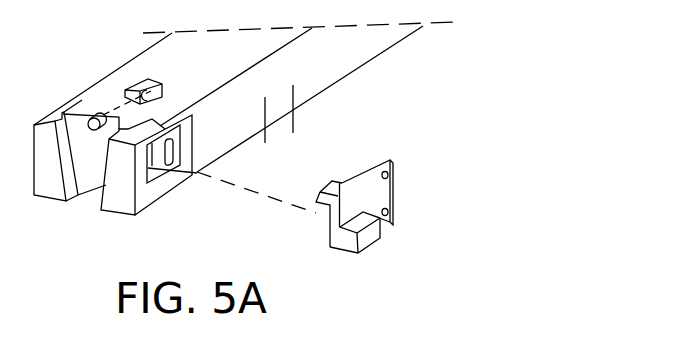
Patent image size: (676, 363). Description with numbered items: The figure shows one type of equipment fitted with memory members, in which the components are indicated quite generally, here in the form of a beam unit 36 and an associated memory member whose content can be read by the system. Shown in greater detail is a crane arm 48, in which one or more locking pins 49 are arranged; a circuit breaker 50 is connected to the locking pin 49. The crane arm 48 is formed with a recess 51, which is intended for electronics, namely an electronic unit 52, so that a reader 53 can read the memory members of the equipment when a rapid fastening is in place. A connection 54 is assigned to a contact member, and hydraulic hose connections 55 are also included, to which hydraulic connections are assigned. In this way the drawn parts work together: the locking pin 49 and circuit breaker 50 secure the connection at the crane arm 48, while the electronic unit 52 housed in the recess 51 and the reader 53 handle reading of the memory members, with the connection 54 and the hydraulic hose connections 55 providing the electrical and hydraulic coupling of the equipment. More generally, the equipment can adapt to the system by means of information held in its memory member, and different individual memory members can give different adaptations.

The beam unit 36 is at (455, 60).
The crane arm 48 is at (157, 58).
The locking pin 49 is at (92, 121).
The circuit breaker 50 is at (138, 82).
The recess 51 is at (153, 170).
The electronic unit 52 is at (371, 166).
The reader 53 is at (320, 191).
The connection 54 is at (356, 257).
The hydraulic hose connections 55 is at (275, 143).